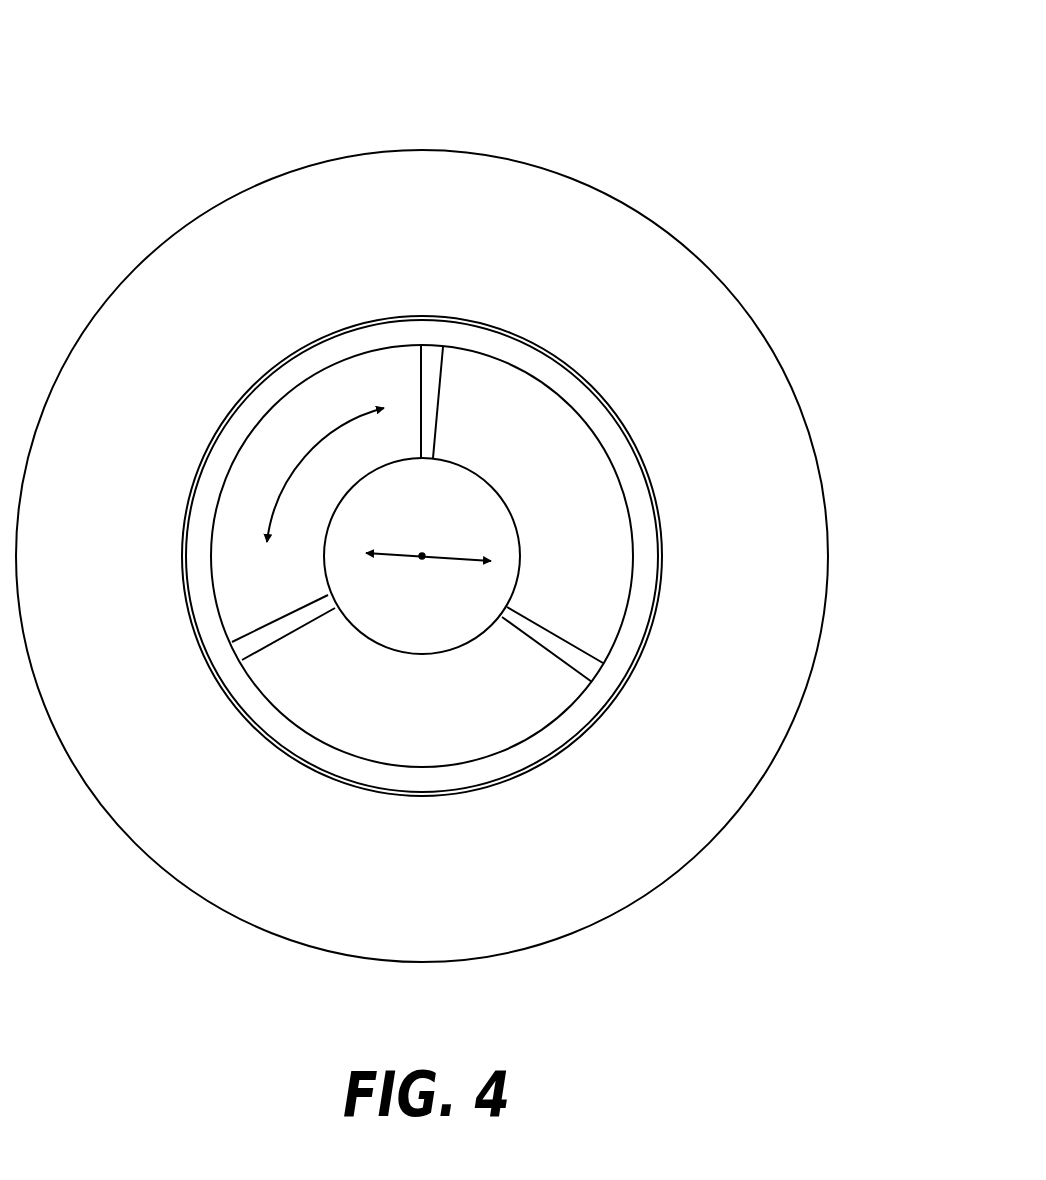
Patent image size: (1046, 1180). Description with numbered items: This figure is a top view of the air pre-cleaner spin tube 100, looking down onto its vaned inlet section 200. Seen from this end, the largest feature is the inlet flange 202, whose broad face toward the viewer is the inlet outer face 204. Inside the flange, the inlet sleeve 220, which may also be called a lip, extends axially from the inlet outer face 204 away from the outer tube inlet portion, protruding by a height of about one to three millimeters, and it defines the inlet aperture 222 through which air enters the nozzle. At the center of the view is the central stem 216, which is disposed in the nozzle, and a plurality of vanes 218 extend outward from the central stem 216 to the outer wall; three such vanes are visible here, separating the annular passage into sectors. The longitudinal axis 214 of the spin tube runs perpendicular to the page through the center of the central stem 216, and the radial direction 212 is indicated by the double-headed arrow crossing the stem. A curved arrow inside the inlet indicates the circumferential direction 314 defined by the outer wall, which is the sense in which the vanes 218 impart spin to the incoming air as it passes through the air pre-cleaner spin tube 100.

The air pre-cleaner spin tube 100 is at (567, 112).
The vaned inlet section 200 is at (578, 446).
The inlet flange 202 is at (783, 752).
The inlet outer face 204 is at (693, 370).
The radial direction 212 is at (396, 554).
The longitudinal axis 214 is at (422, 559).
The central stem 216 is at (470, 524).
The vanes 218 is at (432, 370).
The inlet sleeve 220 is at (664, 600).
The inlet aperture 222 is at (600, 567).
The circumferential direction 314 is at (313, 448).